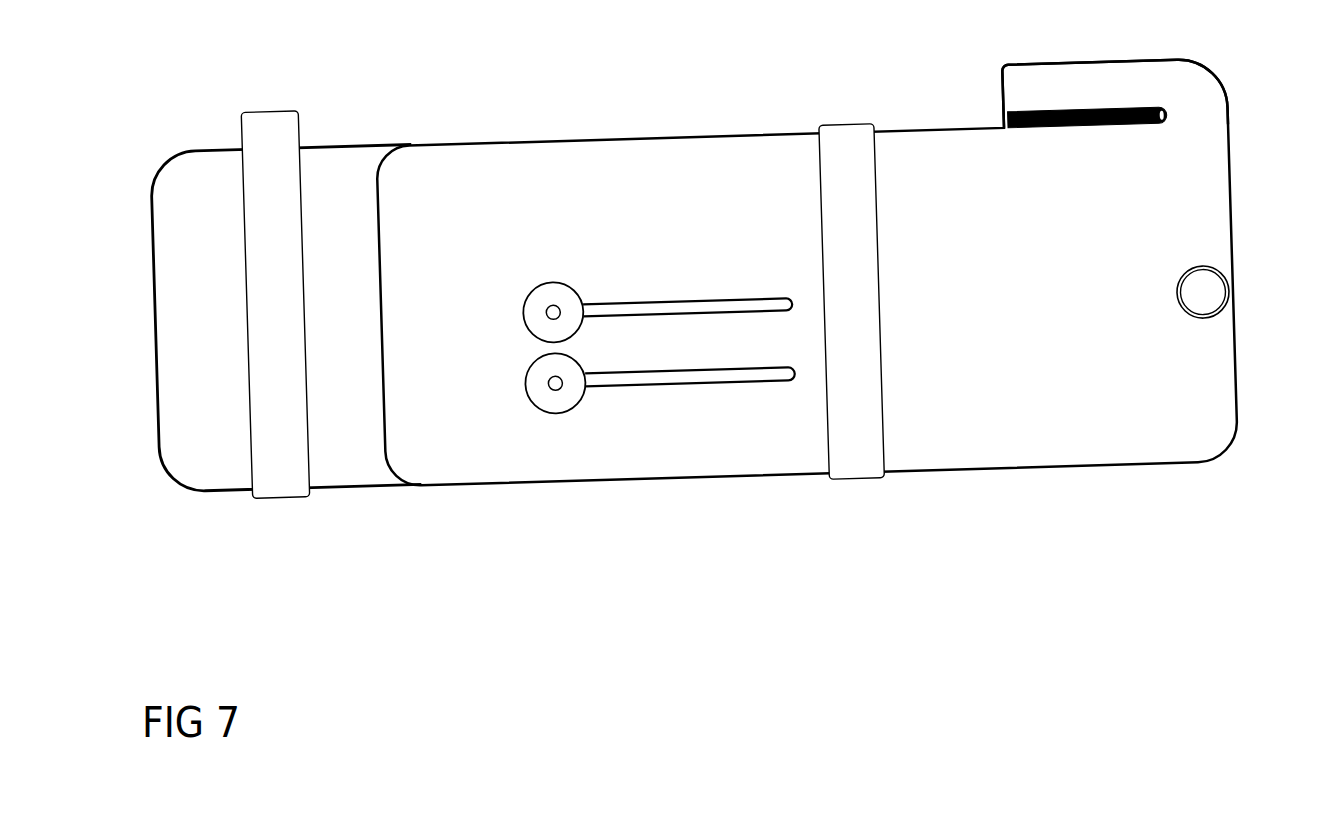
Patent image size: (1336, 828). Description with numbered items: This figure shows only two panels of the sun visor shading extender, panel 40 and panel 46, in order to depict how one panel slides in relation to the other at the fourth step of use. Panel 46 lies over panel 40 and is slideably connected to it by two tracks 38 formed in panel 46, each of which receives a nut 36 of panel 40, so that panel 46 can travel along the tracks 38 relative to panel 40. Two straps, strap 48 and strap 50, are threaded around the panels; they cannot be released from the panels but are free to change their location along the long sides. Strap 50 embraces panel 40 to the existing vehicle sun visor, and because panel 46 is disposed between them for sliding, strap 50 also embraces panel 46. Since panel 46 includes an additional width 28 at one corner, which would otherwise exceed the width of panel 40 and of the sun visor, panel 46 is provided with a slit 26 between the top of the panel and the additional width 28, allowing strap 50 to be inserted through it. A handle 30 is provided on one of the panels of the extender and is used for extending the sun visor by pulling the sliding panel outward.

The slit 26 is at (1055, 110).
The additional width 28 is at (1087, 87).
The handle 30 is at (1205, 280).
The nut 36 is at (542, 311).
The track 38 is at (707, 302).
The panel 40 is at (333, 180).
The panel 46 is at (922, 155).
The strap 48 is at (287, 473).
The strap 50 is at (860, 453).